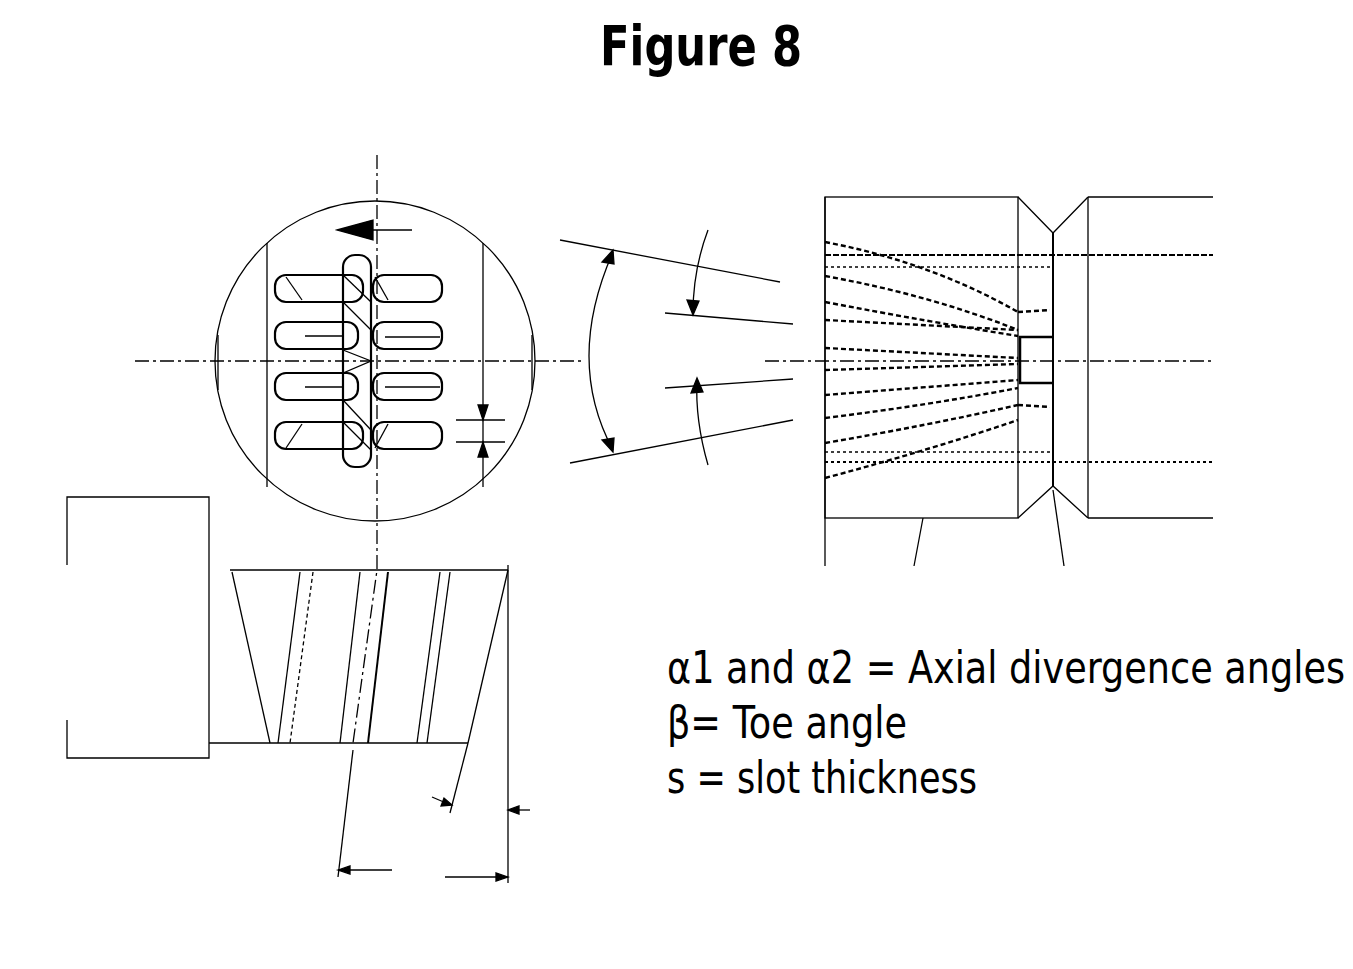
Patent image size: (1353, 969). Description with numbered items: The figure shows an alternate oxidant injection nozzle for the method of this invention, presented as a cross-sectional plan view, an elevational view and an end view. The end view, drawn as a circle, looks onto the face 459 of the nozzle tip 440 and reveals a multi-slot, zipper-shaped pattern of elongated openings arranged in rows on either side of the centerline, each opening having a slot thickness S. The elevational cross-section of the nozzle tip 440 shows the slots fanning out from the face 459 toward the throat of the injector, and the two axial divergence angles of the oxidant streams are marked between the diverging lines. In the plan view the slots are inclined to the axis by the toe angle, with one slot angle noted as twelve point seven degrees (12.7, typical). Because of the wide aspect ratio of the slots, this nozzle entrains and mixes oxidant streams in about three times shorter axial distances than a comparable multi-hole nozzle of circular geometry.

The face 459 is at (462, 252).
The nozzle tip 440 is at (919, 202).
The slot thickness S is at (495, 431).
The slot angle 12.7 degrees typical 12.7 is at (481, 817).